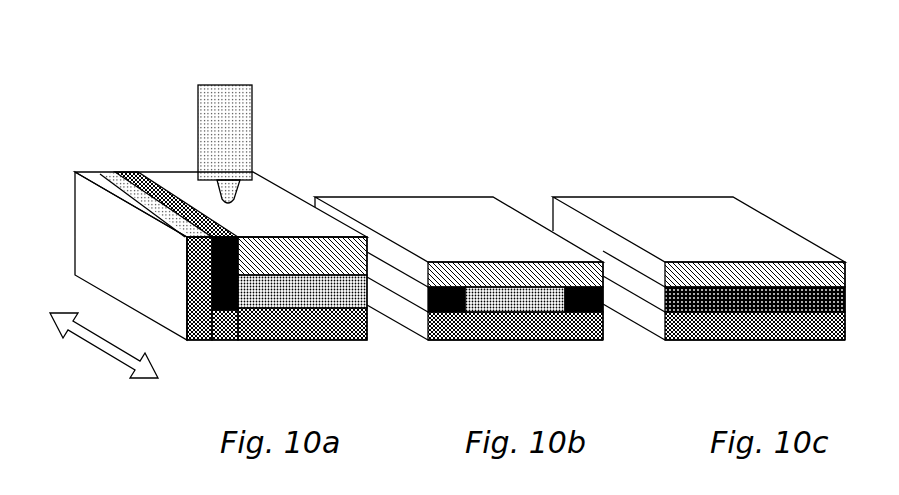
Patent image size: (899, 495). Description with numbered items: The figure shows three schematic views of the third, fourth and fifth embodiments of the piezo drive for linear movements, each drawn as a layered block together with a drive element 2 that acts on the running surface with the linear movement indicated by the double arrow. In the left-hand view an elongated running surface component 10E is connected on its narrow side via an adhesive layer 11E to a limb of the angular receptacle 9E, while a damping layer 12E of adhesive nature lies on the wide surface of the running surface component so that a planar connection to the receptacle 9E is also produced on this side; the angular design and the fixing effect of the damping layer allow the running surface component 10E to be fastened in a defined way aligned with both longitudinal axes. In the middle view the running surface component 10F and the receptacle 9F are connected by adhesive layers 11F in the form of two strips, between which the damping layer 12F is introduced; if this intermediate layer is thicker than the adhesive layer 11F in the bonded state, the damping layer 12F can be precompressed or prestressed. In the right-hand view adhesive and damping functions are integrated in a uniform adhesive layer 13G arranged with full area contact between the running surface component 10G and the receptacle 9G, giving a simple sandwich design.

In FIG. 10a, the cutting tool 2 is at (193, 118).
In FIG. 10a, the carrier substrate layer 9E is at (295, 354).
In FIG. 10a, the running surface component 10E is at (307, 218).
In FIG. 10a, the adhesive layer 11E is at (145, 213).
In FIG. 10a, the intermediate layer 12E is at (327, 329).
In FIG. 10b, the receptacle 9F is at (526, 331).
In FIG. 10b, the running surface component 10F is at (515, 210).
In FIG. 10b, the adhesive layers 11F is at (515, 340).
In FIG. 10b, the intermediate layer 12F is at (534, 336).
In FIG. 10c, the receptacle 9G is at (724, 329).
In FIG. 10c, the running surface component 10G is at (748, 210).
In FIG. 10c, the uniform adhesive layer 13G is at (730, 244).